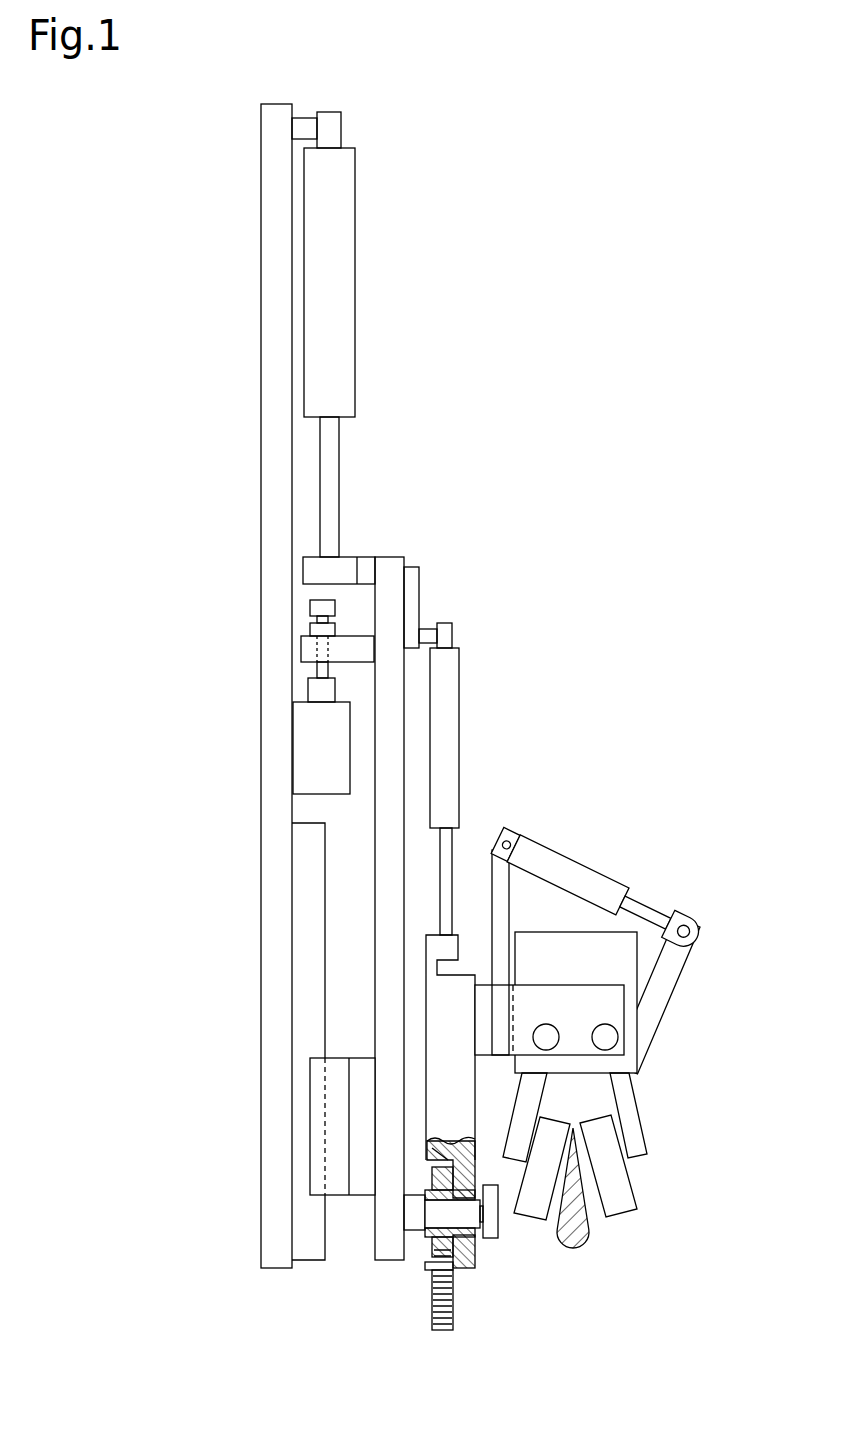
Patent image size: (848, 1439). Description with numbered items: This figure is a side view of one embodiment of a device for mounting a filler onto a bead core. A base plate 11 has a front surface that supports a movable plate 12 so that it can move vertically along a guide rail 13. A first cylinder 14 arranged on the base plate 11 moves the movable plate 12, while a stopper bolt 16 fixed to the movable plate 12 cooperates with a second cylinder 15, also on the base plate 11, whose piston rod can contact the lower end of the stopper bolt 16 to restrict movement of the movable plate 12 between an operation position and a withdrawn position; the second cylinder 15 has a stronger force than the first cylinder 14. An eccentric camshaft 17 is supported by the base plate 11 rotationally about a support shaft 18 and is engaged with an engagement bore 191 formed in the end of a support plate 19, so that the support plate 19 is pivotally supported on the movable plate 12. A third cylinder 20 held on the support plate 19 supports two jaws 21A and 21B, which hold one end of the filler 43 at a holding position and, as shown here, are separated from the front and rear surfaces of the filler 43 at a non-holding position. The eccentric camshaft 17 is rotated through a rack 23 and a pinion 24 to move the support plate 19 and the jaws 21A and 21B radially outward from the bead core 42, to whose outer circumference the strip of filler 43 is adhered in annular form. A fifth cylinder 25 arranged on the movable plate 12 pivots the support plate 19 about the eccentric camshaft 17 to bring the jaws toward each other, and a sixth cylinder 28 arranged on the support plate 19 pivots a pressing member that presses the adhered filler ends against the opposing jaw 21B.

The base plate 11 is at (272, 288).
The movable plate 12 is at (398, 690).
The guide rail 13 is at (302, 875).
The first cylinder 14 is at (345, 252).
The second cylinder 15 is at (298, 738).
The stopper bolt 16 is at (305, 608).
The eccentric camshaft 17 is at (477, 1250).
The support shaft 18 is at (500, 1228).
The support plate 19 is at (462, 1085).
The engagement bore 191 is at (463, 1142).
The third cylinder 20 is at (630, 1023).
The jaw 21A is at (608, 1130).
The jaw 21B is at (547, 1122).
The rack 23 is at (432, 1308).
The pinion 24 is at (425, 1240).
The fifth cylinder 25 is at (452, 740).
The sixth cylinder 28 is at (565, 865).
The bead core 42 is at (570, 1248).
The filler 43 is at (577, 1188).